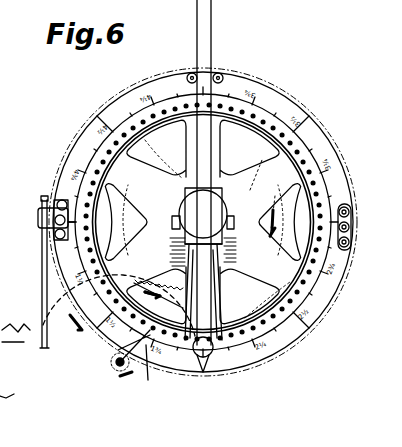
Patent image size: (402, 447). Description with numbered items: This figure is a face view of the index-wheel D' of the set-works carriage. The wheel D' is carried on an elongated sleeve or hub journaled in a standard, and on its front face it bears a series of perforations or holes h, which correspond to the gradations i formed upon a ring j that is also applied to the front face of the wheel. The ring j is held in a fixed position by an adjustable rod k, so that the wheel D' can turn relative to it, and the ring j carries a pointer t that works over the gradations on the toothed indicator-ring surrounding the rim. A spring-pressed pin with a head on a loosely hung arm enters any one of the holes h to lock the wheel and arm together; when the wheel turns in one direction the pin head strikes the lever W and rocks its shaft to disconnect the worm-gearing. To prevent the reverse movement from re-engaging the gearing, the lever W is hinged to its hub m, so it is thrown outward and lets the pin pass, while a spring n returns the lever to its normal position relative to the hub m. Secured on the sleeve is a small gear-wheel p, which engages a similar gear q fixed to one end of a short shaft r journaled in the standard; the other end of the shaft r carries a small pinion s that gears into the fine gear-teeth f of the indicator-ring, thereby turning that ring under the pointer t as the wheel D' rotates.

The dial wheel D is at (203, 222).
The index-wheel D' is at (117, 75).
The perforations or holes h is at (146, 122).
The lever W is at (197, 32).
The pointer t is at (192, 73).
The hub m is at (190, 218).
The spring n is at (222, 210).
The bracket F is at (203, 289).
The pivot u is at (202, 339).
The pointer z is at (200, 369).
The gear q is at (158, 303).
The small gear-wheel p is at (159, 287).
The adjustable rod k is at (42, 270).
The ring j is at (60, 186).
The gradations i is at (72, 144).
The small pinion s is at (116, 360).
The short shaft r is at (119, 368).
The fine gear-teeth f is at (150, 373).